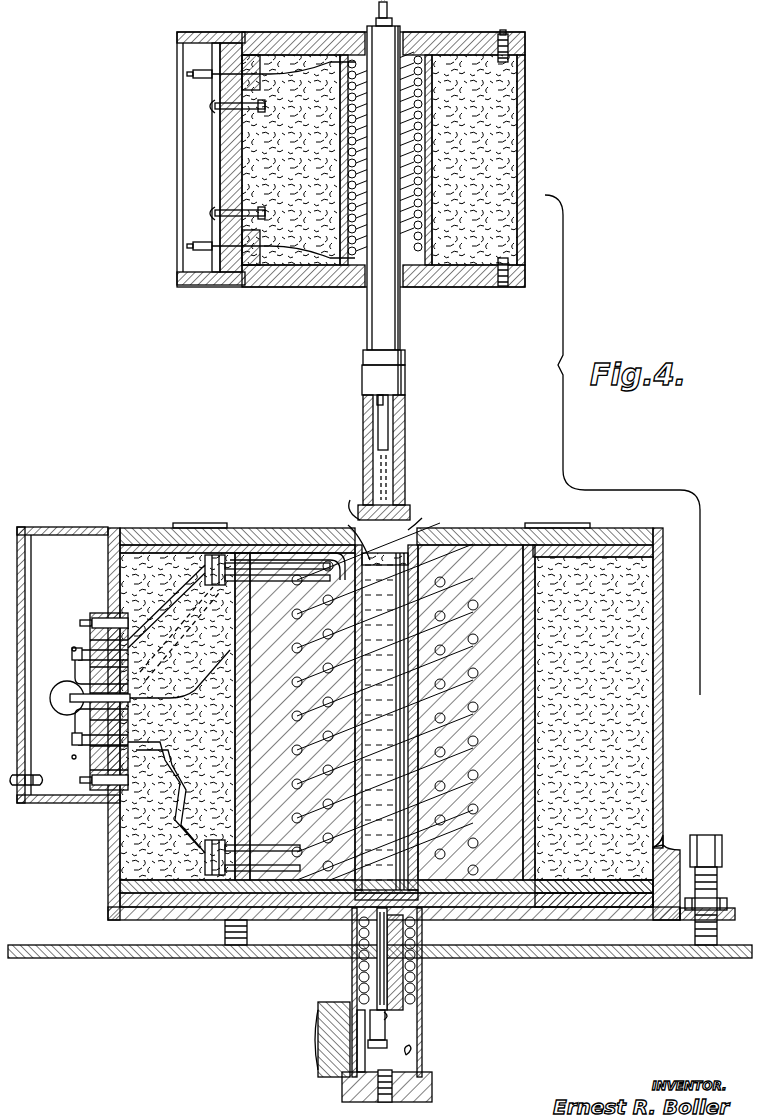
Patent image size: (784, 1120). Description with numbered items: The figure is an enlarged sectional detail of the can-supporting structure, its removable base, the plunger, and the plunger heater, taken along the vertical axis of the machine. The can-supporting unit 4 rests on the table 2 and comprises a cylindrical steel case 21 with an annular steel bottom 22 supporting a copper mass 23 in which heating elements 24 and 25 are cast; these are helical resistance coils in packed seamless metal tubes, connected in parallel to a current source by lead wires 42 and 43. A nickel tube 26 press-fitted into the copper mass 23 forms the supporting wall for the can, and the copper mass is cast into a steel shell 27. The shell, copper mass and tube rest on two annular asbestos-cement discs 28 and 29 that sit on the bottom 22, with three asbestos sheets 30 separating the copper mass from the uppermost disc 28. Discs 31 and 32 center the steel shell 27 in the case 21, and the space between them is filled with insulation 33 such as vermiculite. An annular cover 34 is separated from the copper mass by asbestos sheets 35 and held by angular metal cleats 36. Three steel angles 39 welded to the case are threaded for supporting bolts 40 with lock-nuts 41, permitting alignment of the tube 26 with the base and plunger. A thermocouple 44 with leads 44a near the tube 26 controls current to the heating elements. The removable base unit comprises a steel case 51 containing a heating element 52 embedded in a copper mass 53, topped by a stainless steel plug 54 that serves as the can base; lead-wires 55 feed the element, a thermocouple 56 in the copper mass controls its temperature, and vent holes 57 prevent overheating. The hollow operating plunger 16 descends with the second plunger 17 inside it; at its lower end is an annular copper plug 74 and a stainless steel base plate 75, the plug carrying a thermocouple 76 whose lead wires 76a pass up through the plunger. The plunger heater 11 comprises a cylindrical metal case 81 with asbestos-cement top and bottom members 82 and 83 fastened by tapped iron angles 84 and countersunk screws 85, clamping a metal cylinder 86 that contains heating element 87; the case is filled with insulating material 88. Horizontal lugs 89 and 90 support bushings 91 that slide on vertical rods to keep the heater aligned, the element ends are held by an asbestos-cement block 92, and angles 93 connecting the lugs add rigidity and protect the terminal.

The table 2 is at (660, 958).
The can-supporting unit 4 is at (664, 650).
The plunger heater 11 is at (526, 157).
The hollow operating plunger 16 is at (403, 378).
The second plunger 17 is at (390, 408).
The cylindrical steel case 21 is at (664, 760).
The annular steel bottom 22 is at (112, 915).
The copper mass 23 is at (495, 560).
The heating element 24 is at (298, 575).
The heating element 25 is at (328, 560).
The nickel tube 26 is at (445, 560).
The steel shell 27 is at (535, 675).
The asbestos-cement composition disc 28 is at (135, 885).
The asbestos-cement composition disc 29 is at (140, 898).
The asbestos sheets 30 is at (598, 898).
The asbestos-cement composition disc 31 is at (580, 883).
The asbestos-cement composition disc 32 is at (640, 560).
The insulation 33 is at (628, 718).
The annular asbestos-cement composition cover 34 is at (620, 538).
The asbestos sheets 35 is at (532, 552).
The angular metal cleats 36 is at (580, 535).
The steel angles 39 is at (672, 845).
The supporting bolts 40 is at (225, 933).
The lock-nuts 41 is at (727, 900).
The lead wire 42 is at (185, 610).
The lead wire 43 is at (185, 822).
The thermocouple 44 is at (290, 555).
The thermocouple leads 44a is at (180, 690).
The steel case 51 is at (357, 985).
The heating element 52 is at (410, 985).
The copper mass 53 is at (385, 1010).
The stainless steel plug 54 is at (412, 935).
The lead-wires 55 is at (368, 1022).
The thermocouple 56 is at (358, 935).
The vent holes 57 is at (410, 1053).
The annular copper plug 74 is at (405, 458).
The stainless steel base plate 75 is at (405, 508).
The thermocouple 76 is at (380, 478).
The thermocouple lead wires 76a is at (376, 14).
The cylindrical metal case 81 is at (520, 275).
The top member 82 is at (470, 34).
The bottom member 83 is at (490, 287).
The tapped iron angles 84 is at (518, 85).
The countersunk screws 85 is at (508, 40).
The metal cylinder 86 is at (340, 180).
The heating element 87 is at (425, 128).
The insulating material 88 is at (492, 205).
The horizontal lug 89 is at (250, 38).
The horizontal lug 90 is at (210, 284).
The bushings or guideways 91 is at (210, 258).
The asbestos-cement composition block 92 is at (215, 208).
The angles 93 is at (182, 113).